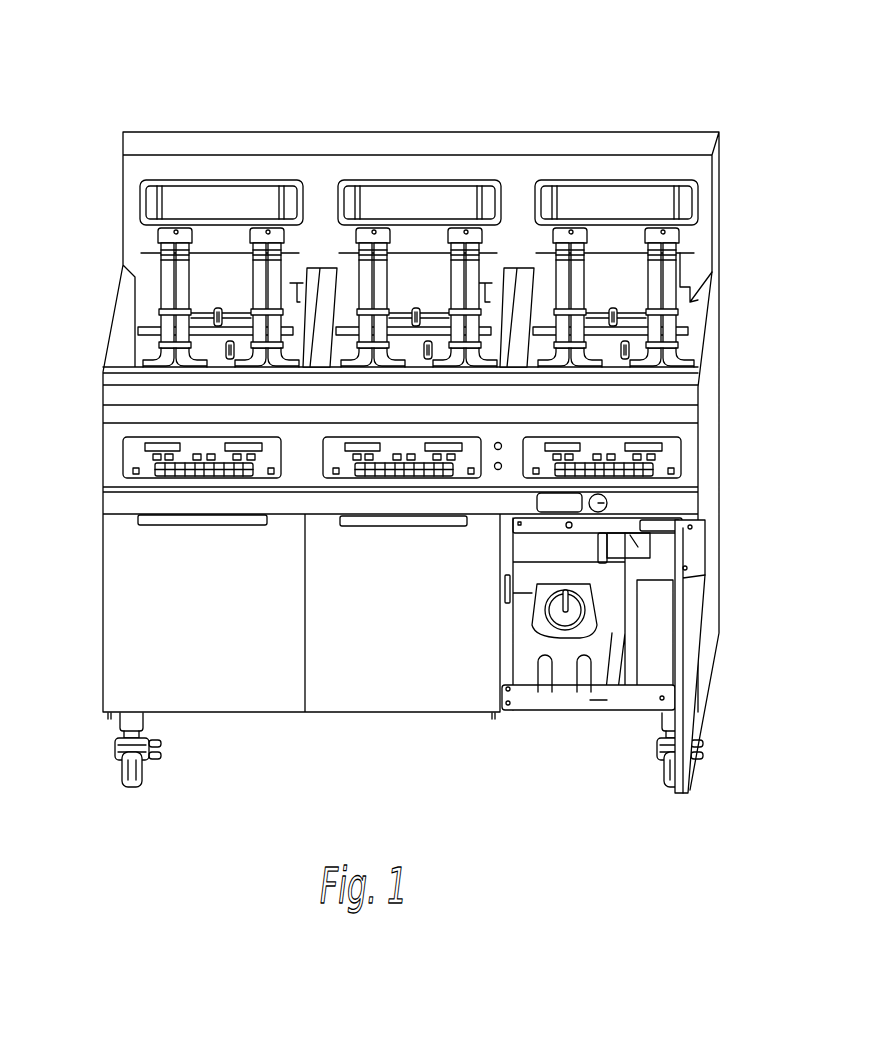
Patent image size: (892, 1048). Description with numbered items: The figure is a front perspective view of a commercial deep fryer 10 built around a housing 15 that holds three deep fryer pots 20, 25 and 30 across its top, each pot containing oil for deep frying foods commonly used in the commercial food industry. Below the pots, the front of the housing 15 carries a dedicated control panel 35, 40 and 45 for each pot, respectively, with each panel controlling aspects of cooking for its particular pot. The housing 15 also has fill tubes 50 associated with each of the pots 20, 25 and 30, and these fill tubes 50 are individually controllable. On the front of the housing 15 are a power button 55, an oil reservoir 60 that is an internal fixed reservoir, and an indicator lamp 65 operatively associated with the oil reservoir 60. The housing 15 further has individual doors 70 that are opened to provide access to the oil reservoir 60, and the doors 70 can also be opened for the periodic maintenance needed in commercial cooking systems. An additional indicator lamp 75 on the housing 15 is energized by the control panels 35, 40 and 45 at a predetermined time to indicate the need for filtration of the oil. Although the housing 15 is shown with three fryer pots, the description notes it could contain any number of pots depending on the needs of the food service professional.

The deep fryer 10 is at (258, 85).
The housing 15 is at (705, 406).
The deep fryer pot 20 is at (218, 278).
The deep fryer pot 25 is at (407, 240).
The deep fryer pot 30 is at (628, 275).
The control panel 35 is at (136, 457).
The control panel 40 is at (323, 468).
The control panel 45 is at (693, 458).
The fill tubes 50 is at (690, 302).
The power button 55 is at (607, 501).
The oil reservoir 60 is at (608, 630).
The indicator lamp 65 is at (496, 469).
The doors 70 is at (682, 718).
The indicator lamp 75 is at (494, 449).